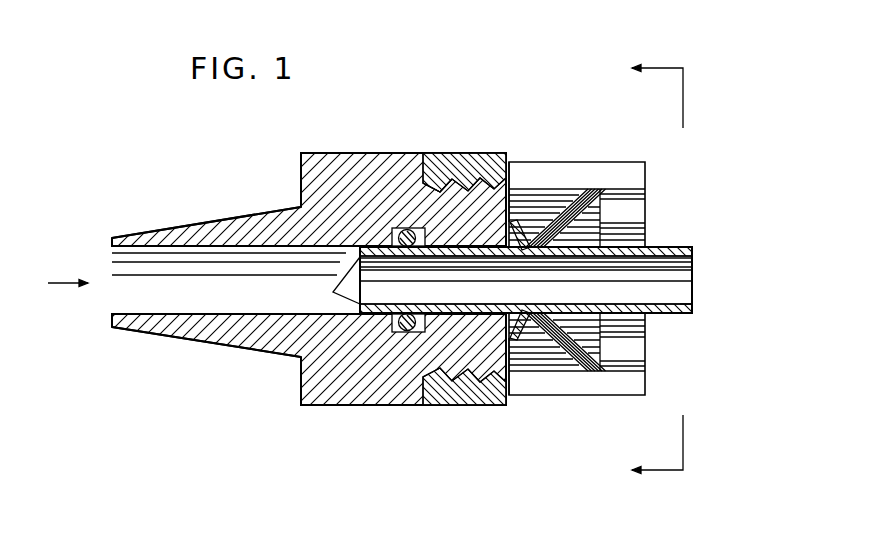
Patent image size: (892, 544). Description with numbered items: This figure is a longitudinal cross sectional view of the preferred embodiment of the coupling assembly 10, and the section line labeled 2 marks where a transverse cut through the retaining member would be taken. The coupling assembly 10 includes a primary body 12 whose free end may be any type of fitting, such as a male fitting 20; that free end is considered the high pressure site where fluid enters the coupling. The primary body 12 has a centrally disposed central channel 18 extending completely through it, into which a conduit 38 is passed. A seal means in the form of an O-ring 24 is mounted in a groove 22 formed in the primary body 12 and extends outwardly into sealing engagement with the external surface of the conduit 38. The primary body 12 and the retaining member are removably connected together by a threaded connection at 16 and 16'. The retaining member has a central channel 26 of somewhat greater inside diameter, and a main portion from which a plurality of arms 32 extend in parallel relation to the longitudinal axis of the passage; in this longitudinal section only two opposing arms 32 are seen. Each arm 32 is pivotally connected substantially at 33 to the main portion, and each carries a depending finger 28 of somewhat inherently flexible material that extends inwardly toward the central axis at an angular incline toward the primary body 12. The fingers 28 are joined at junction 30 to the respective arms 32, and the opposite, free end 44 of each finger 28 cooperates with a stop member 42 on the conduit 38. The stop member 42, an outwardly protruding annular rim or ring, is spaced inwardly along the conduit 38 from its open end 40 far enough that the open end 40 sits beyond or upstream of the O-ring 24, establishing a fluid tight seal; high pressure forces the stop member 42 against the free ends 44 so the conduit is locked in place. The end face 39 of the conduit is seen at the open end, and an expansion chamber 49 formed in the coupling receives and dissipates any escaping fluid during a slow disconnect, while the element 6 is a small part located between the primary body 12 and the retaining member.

The coupling assembly 10 is at (706, 128).
The primary body 12 is at (298, 150).
The male fitting 20 is at (183, 228).
The central channel 18 is at (210, 248).
The threaded connection 16 is at (464, 260).
The threaded connection 16' is at (412, 192).
The groove 22 is at (397, 230).
The O-ring 24 is at (427, 232).
The open end 40 is at (340, 288).
The stop member 42 is at (514, 276).
The free end of the retaining fingers 44 is at (508, 273).
The expansion chamber 49 is at (514, 215).
The retaining element 6 is at (525, 240).
The pivotal connection 33 is at (574, 170).
The arms 32 is at (609, 167).
The central channel 26 is at (640, 193).
The junction 30 is at (640, 200).
The depending finger 28 is at (640, 223).
The ferrule end face 39 is at (687, 286).
The conduit 38 is at (677, 311).
The section line 2- 2 is at (657, 270).